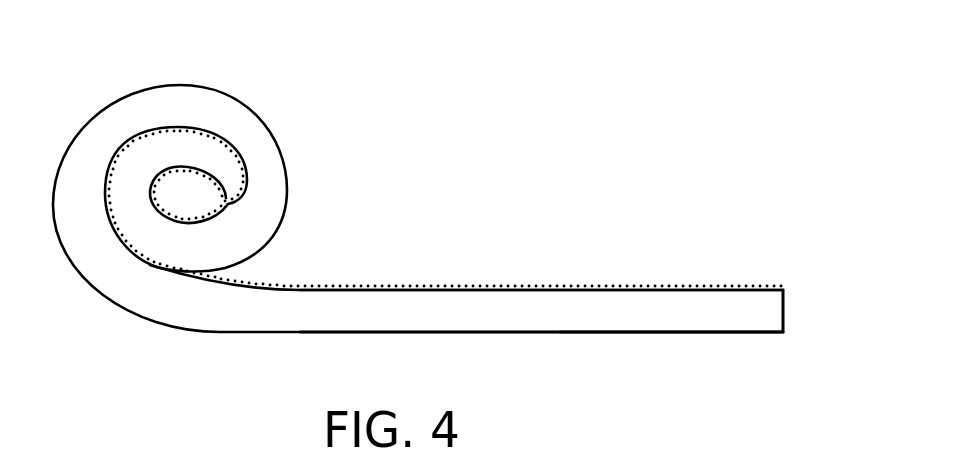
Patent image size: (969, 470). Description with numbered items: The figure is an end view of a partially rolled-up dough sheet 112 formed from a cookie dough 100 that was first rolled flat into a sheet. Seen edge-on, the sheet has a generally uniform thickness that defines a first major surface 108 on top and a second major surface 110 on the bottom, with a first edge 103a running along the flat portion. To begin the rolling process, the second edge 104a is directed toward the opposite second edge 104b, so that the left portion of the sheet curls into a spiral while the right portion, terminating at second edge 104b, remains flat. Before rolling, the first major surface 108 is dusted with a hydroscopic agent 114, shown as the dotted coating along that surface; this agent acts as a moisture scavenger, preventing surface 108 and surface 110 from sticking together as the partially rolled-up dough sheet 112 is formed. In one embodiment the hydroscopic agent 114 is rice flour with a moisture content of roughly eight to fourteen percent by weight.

The cookie dough 100 is at (623, 298).
The first edge 103a is at (433, 317).
The second edge 104a is at (240, 197).
The second edge 104b is at (783, 310).
The first major surface 108 is at (537, 285).
The second major surface 110 is at (602, 333).
The partially rolled-up dough sheet 112 is at (459, 219).
The hydroscopic agent 114 is at (309, 284).